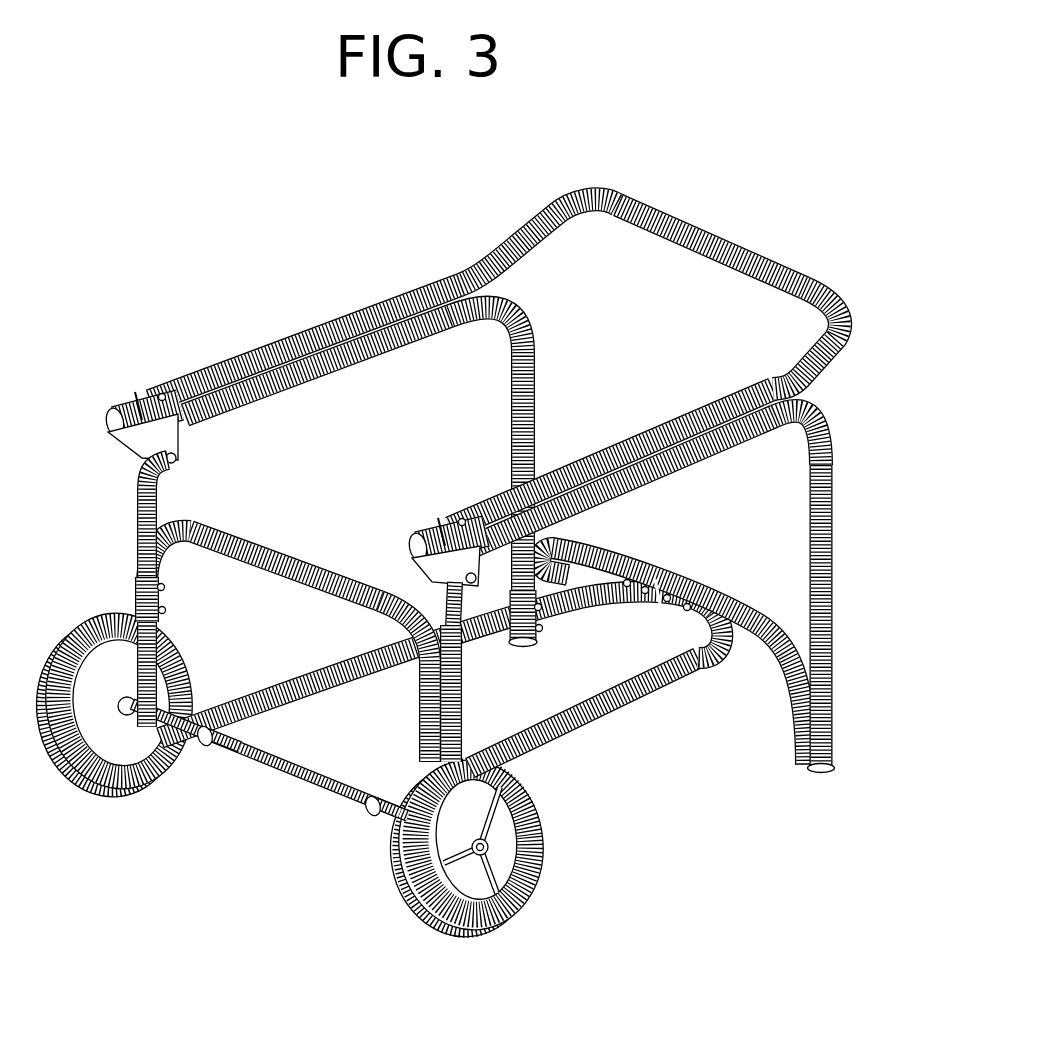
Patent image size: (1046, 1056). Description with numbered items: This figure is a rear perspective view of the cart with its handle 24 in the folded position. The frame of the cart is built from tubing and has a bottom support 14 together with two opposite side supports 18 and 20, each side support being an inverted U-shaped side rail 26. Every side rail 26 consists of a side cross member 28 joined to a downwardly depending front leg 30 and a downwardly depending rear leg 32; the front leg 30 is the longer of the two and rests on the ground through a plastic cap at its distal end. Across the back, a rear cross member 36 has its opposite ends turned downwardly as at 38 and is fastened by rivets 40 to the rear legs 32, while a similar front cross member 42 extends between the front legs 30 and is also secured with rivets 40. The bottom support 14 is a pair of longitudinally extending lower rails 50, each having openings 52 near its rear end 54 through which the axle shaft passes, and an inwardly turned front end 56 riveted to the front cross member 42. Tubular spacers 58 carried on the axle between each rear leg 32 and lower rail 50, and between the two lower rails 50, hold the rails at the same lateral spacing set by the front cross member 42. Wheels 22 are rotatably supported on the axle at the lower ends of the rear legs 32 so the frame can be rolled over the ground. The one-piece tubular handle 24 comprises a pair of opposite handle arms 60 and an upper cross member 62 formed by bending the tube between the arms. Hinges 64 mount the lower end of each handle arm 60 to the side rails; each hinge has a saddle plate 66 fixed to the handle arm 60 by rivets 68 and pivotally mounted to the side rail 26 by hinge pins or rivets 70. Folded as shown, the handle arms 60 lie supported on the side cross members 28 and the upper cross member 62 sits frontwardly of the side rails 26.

The bottom support 14 is at (577, 750).
The side support 18 is at (655, 498).
The side support 20 is at (328, 384).
The wheels 22 is at (108, 790).
The handle 24 is at (608, 180).
The side rail 26 is at (538, 302).
The side cross member 28 is at (446, 330).
The front leg 30 is at (537, 368).
The rear leg 32 is at (134, 542).
The rear cross member 36 is at (344, 553).
The downwardly turned end 38 is at (176, 560).
The rivets 40 is at (170, 611).
The front cross member 42 is at (750, 606).
The lower rail 50 is at (345, 664).
The openings 52 is at (217, 753).
The rear end 54 is at (200, 757).
The inwardly turned front end 56 is at (718, 652).
The tubular spacers 58 is at (292, 784).
The handle arms 60 is at (373, 302).
The upper cross member 62 is at (722, 236).
The hinges 64 is at (106, 396).
The saddle plates 66 is at (137, 394).
The rivets 68 is at (164, 393).
The hinge pins or rivets 70 is at (178, 459).